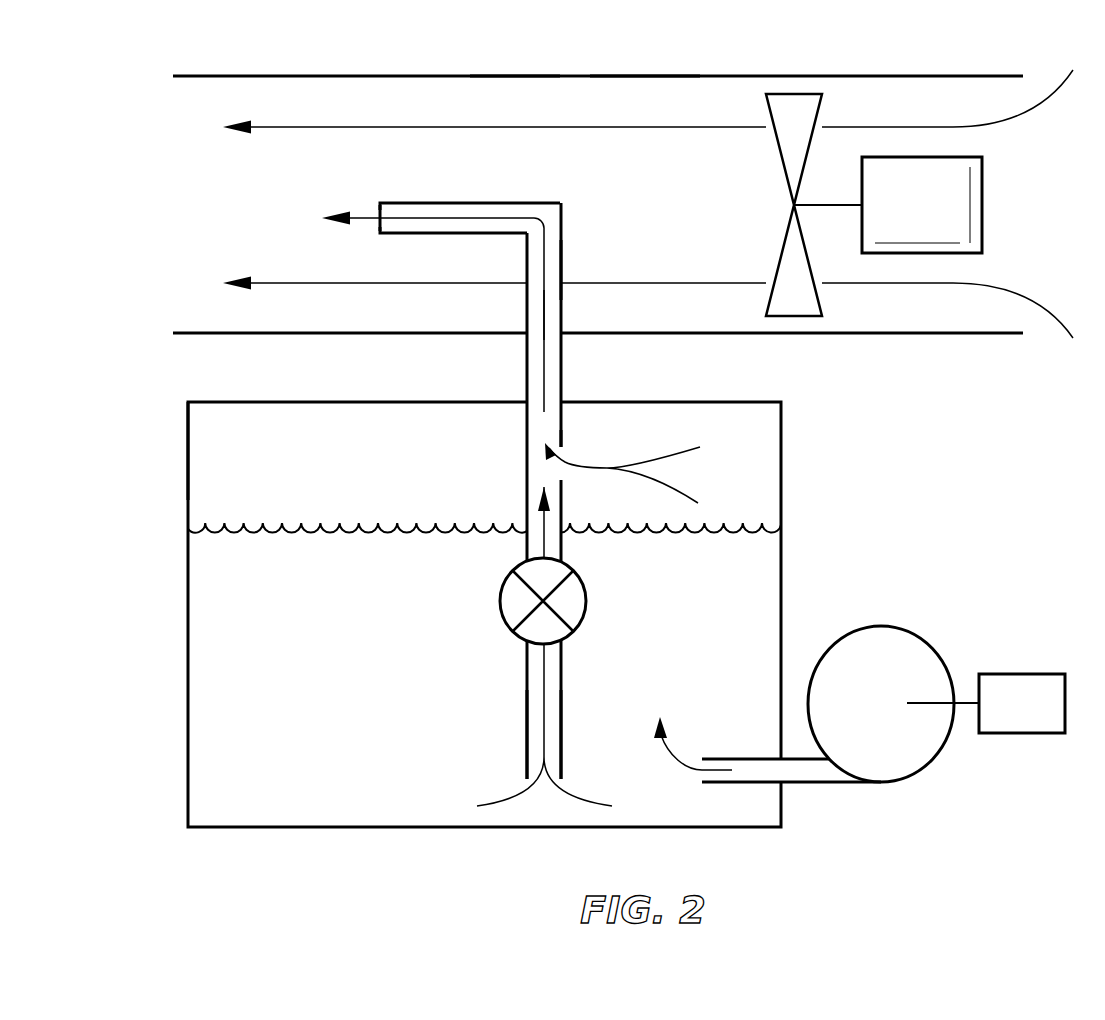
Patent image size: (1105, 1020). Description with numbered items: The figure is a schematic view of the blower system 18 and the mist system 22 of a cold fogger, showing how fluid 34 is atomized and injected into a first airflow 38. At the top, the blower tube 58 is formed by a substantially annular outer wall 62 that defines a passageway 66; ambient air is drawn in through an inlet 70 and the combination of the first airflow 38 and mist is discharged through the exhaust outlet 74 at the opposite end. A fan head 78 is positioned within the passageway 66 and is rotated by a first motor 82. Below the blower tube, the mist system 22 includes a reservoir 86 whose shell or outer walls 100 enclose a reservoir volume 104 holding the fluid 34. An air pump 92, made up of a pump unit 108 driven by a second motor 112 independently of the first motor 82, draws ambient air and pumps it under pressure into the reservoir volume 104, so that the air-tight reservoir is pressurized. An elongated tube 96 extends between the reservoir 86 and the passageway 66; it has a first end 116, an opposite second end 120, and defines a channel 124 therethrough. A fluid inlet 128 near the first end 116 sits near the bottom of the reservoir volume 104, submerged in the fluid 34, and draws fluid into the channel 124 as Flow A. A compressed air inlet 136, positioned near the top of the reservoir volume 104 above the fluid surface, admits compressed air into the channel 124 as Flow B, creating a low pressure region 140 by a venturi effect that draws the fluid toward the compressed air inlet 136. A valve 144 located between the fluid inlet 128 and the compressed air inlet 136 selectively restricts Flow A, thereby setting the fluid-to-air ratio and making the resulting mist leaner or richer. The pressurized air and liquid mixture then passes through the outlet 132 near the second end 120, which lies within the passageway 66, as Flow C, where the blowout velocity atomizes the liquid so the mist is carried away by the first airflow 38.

The blower system 18 is at (906, 48).
The mist system 22 is at (512, 363).
The fluid 34 is at (235, 533).
The first airflow 38 is at (1030, 107).
The blower tube 58 is at (532, 75).
The outer wall 62 is at (617, 75).
The passageway 66 is at (336, 85).
The inlet 70 is at (1023, 340).
The exhaust outlet 74 is at (173, 74).
The fan head 78 is at (795, 113).
The first motor 82 is at (982, 205).
The reservoir 86 is at (187, 457).
The air pump 92 is at (814, 698).
The tube 96 is at (562, 255).
The outer walls 100 is at (782, 420).
The reservoir volume 104 is at (219, 703).
The pump unit 108 is at (915, 632).
The second motor 112 is at (1010, 673).
The first end 116 is at (562, 707).
The second end 120 is at (428, 203).
The channel 124 is at (556, 216).
The fluid inlet 128 is at (562, 778).
The outlet 132 is at (378, 205).
The compressed air inlet 136 is at (565, 446).
The low pressure region 140 is at (533, 475).
The valve 144 is at (587, 598).
The Flow A is at (543, 690).
The Flow B is at (595, 467).
The Flow C is at (546, 312).